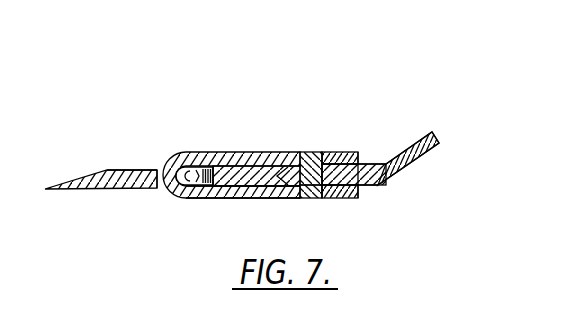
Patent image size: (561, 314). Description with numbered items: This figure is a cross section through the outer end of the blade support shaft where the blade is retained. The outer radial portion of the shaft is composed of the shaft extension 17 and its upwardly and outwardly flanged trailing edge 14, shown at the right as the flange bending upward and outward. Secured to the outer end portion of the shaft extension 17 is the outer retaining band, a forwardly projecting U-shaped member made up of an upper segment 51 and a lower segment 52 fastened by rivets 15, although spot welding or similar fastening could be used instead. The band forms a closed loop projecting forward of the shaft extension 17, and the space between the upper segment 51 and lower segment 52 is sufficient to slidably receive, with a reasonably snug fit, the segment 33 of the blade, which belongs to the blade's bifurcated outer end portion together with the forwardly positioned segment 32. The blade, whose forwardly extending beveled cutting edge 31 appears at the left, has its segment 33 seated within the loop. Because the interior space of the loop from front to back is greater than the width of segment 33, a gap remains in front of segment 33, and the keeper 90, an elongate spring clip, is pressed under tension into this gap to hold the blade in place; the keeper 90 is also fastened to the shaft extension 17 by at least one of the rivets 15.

The upwardly and outwardly flanged trailing edge 14 is at (405, 137).
The rivets 15 is at (312, 196).
The shaft extension 17 is at (280, 167).
The beveled cutting edge 31 is at (84, 176).
The segment 32 is at (138, 170).
The segment 33 is at (248, 163).
The upper segment 51 is at (348, 152).
The lower segment 52 is at (255, 198).
The keeper 90 is at (194, 184).